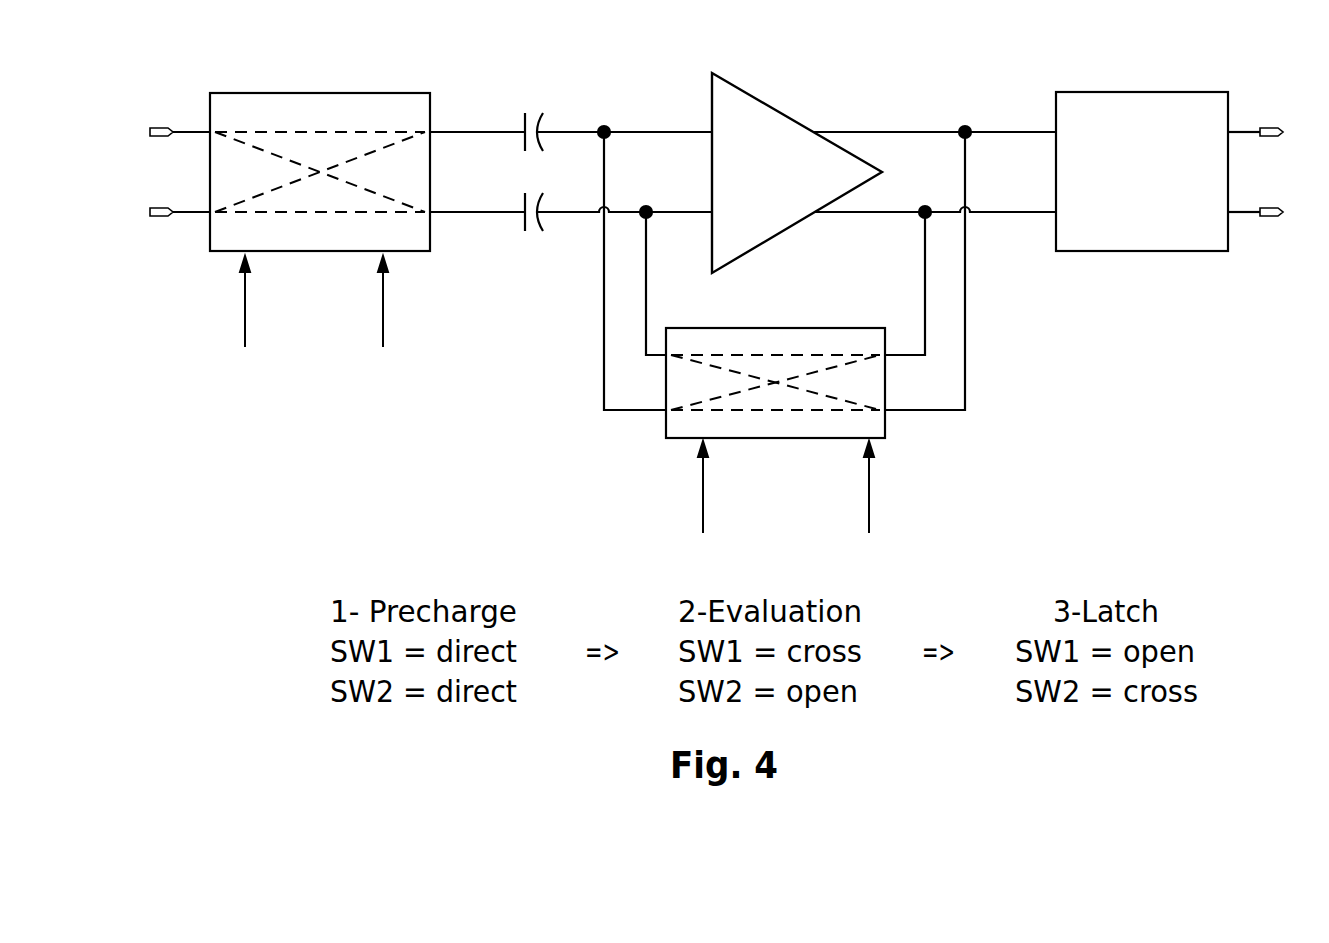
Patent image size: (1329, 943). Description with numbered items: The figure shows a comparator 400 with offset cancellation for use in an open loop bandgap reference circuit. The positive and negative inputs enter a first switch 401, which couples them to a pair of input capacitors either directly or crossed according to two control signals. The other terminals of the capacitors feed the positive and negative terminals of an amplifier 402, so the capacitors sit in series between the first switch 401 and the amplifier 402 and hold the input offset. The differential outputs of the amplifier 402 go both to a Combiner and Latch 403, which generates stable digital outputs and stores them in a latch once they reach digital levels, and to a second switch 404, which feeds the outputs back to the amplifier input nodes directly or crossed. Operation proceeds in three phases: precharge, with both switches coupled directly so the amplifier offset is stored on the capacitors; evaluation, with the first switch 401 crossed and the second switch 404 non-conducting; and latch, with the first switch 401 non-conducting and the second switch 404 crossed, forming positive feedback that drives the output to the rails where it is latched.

The comparator 400 is at (493, 31).
The first switch 401 is at (430, 251).
The amplifier 402 is at (748, 93).
The Combiner and Latch 403 is at (1105, 92).
The second switch 404 is at (885, 438).